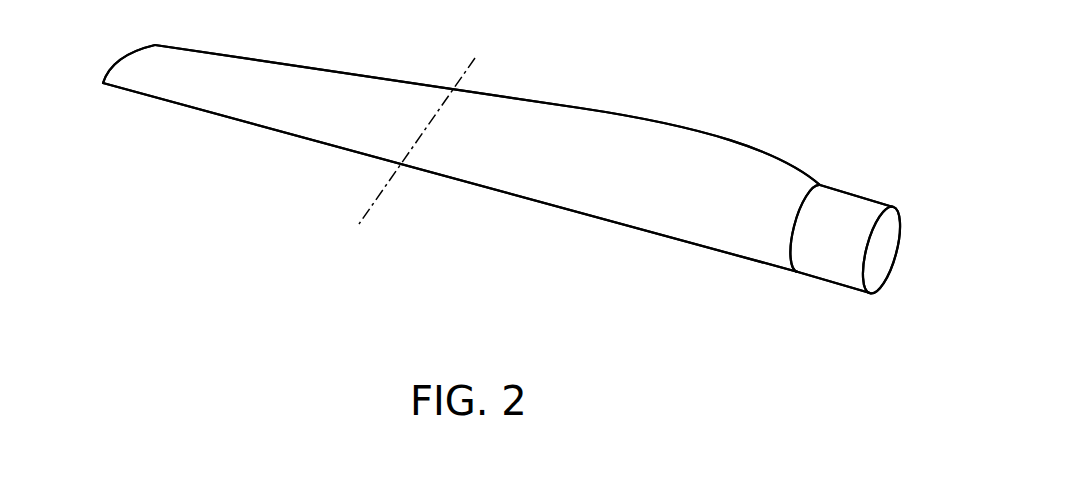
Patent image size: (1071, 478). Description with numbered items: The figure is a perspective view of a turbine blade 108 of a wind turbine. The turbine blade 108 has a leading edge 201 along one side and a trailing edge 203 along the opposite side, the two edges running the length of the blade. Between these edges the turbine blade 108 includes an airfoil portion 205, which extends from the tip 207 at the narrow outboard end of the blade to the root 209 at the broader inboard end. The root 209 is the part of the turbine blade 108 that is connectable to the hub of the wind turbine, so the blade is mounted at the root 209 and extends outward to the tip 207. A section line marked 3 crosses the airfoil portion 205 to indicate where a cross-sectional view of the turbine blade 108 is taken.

The turbine blade 108 is at (615, 278).
The leading edge 201 is at (270, 132).
The trailing edge 203 is at (255, 60).
The airfoil portion 205 is at (640, 128).
The tip 207 is at (133, 52).
The root 209 is at (840, 203).
The section line 3- 3 is at (475, 58).